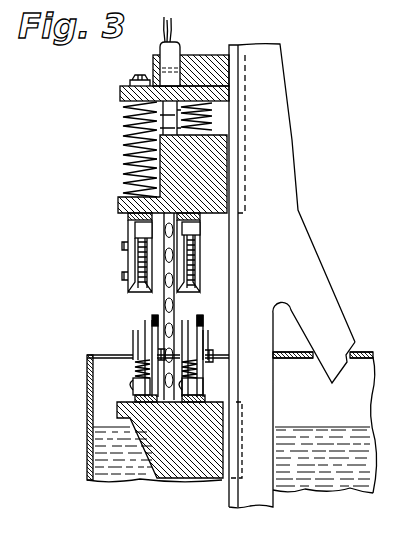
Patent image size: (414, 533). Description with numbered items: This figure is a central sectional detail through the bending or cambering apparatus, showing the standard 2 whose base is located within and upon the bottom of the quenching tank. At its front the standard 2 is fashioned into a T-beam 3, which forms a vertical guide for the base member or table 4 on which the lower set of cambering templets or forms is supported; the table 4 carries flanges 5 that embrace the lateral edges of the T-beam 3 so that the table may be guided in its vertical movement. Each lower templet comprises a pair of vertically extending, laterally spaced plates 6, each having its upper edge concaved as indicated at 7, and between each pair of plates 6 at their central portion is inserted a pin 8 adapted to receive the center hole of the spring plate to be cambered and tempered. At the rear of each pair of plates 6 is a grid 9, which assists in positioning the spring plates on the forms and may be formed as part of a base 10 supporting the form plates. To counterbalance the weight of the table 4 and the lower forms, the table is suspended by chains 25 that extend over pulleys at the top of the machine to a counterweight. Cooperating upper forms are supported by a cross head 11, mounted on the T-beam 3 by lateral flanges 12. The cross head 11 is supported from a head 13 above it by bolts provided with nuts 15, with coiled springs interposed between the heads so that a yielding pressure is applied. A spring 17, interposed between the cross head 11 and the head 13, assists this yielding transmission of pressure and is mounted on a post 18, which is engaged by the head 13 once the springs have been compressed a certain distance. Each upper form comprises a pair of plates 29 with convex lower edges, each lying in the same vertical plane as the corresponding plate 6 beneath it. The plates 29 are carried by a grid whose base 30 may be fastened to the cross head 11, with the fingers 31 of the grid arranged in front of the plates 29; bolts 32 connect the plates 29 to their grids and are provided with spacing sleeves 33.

The standard 2 is at (303, 276).
The T-beam 3 is at (237, 268).
The table 4 is at (155, 418).
The flanges 5 is at (247, 420).
The plates 6 is at (133, 377).
The concaved upper edge 7 is at (197, 372).
The pin 8 is at (142, 322).
The grid 9 is at (153, 322).
The base 10 is at (137, 397).
The cross head 11 is at (172, 174).
The lateral flanges 12 is at (243, 167).
The head 13 is at (191, 70).
The nuts 15 is at (137, 78).
The spring 17 is at (125, 143).
The post 18 is at (125, 178).
The chains 25 is at (173, 30).
The plates 29 is at (140, 262).
The base 30 is at (128, 216).
The fingers 31 is at (130, 232).
The bolts 32 is at (124, 276).
The spacing sleeves 33 is at (156, 306).